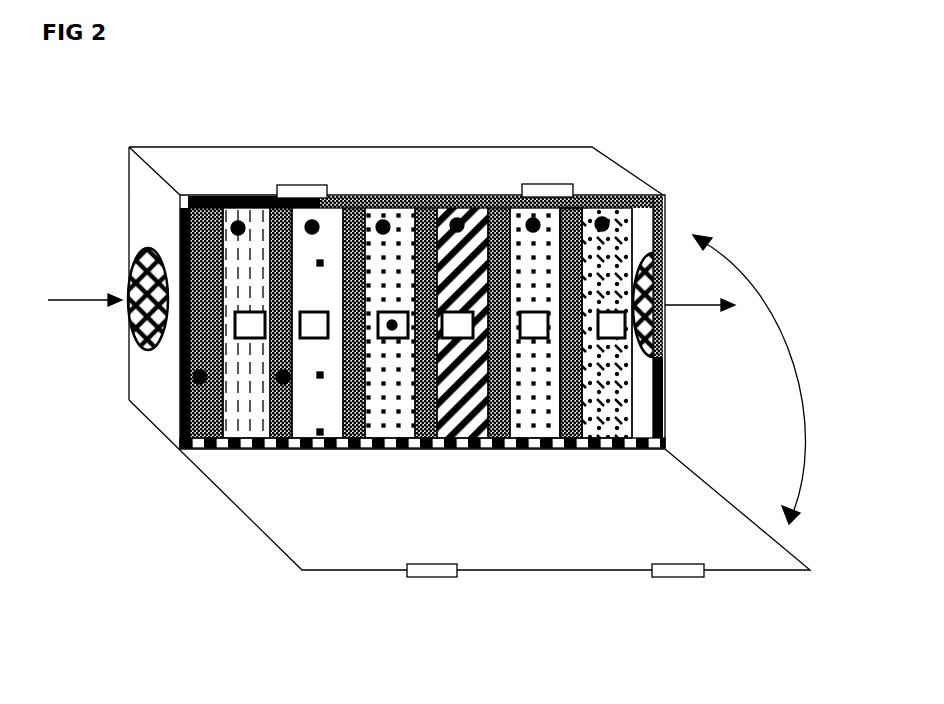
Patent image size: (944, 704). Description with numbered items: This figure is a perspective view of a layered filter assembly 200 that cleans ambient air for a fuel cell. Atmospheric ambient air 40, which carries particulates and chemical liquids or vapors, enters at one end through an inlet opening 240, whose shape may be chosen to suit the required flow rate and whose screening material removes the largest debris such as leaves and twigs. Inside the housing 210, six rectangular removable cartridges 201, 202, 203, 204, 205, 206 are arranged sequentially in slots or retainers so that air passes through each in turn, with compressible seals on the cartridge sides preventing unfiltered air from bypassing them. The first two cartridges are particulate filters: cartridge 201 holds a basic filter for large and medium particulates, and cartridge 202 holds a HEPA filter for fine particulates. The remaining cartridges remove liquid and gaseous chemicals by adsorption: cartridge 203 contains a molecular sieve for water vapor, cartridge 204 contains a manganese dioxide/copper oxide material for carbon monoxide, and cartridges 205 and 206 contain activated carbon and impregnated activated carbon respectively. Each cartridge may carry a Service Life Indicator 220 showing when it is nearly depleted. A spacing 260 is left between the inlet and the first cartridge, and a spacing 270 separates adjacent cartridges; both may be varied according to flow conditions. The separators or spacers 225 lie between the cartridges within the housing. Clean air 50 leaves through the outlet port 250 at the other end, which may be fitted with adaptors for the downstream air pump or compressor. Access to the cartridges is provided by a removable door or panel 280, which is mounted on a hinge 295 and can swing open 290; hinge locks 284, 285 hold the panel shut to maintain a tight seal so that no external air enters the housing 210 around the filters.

The atmospheric ambient air 40 is at (83, 286).
The clean air 50 is at (700, 296).
The filter assembly 200 is at (182, 152).
The first filter cartridge 201 is at (238, 228).
The second filter cartridge 202 is at (312, 227).
The third filter cartridge 203 is at (383, 227).
The fourth filter cartridge 204 is at (457, 225).
The fifth filter cartridge 205 is at (533, 223).
The sixth filter cartridge 206 is at (600, 223).
The housing 210 is at (213, 190).
The Service Life Indicator 220 is at (392, 330).
The spacer 225 is at (562, 418).
The inlet opening 240 is at (150, 350).
The outlet port 250 is at (655, 360).
The spacing between inlet and first cartridge 260 is at (200, 384).
The spacing between cartridges 270 is at (283, 384).
The removable door or panel 280 is at (365, 572).
The hinge lock 284 is at (303, 185).
The hinge lock 285 is at (667, 577).
The swing open 290 is at (769, 379).
The hinge 295 is at (340, 448).